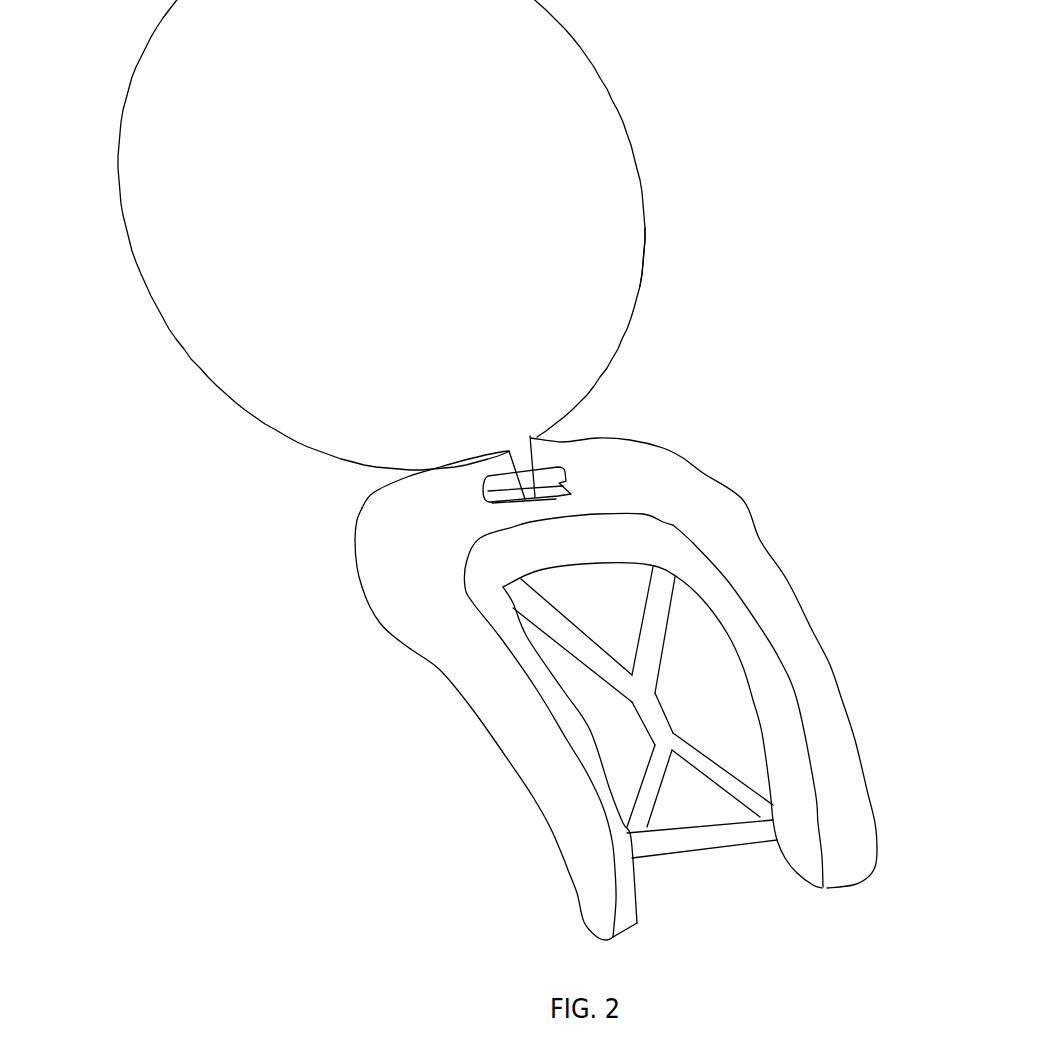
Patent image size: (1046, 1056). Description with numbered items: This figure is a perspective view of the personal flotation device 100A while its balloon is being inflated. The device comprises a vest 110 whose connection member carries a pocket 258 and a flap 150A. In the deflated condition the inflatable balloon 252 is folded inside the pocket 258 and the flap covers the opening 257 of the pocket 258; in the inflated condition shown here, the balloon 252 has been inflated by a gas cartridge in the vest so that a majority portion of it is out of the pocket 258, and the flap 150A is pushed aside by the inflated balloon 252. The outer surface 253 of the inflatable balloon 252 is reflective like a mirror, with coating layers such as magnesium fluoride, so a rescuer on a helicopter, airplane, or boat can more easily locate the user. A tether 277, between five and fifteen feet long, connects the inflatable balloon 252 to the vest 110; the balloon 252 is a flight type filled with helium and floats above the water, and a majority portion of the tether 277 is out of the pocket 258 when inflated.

The personal flotation device 100A is at (162, 383).
The outer surface 253 is at (533, 157).
The inflatable balloon 252 is at (632, 241).
The flap 150A is at (552, 470).
The pocket 258 is at (497, 510).
The opening 257 is at (515, 505).
The tether 277 is at (540, 503).
The vest 110 is at (342, 598).